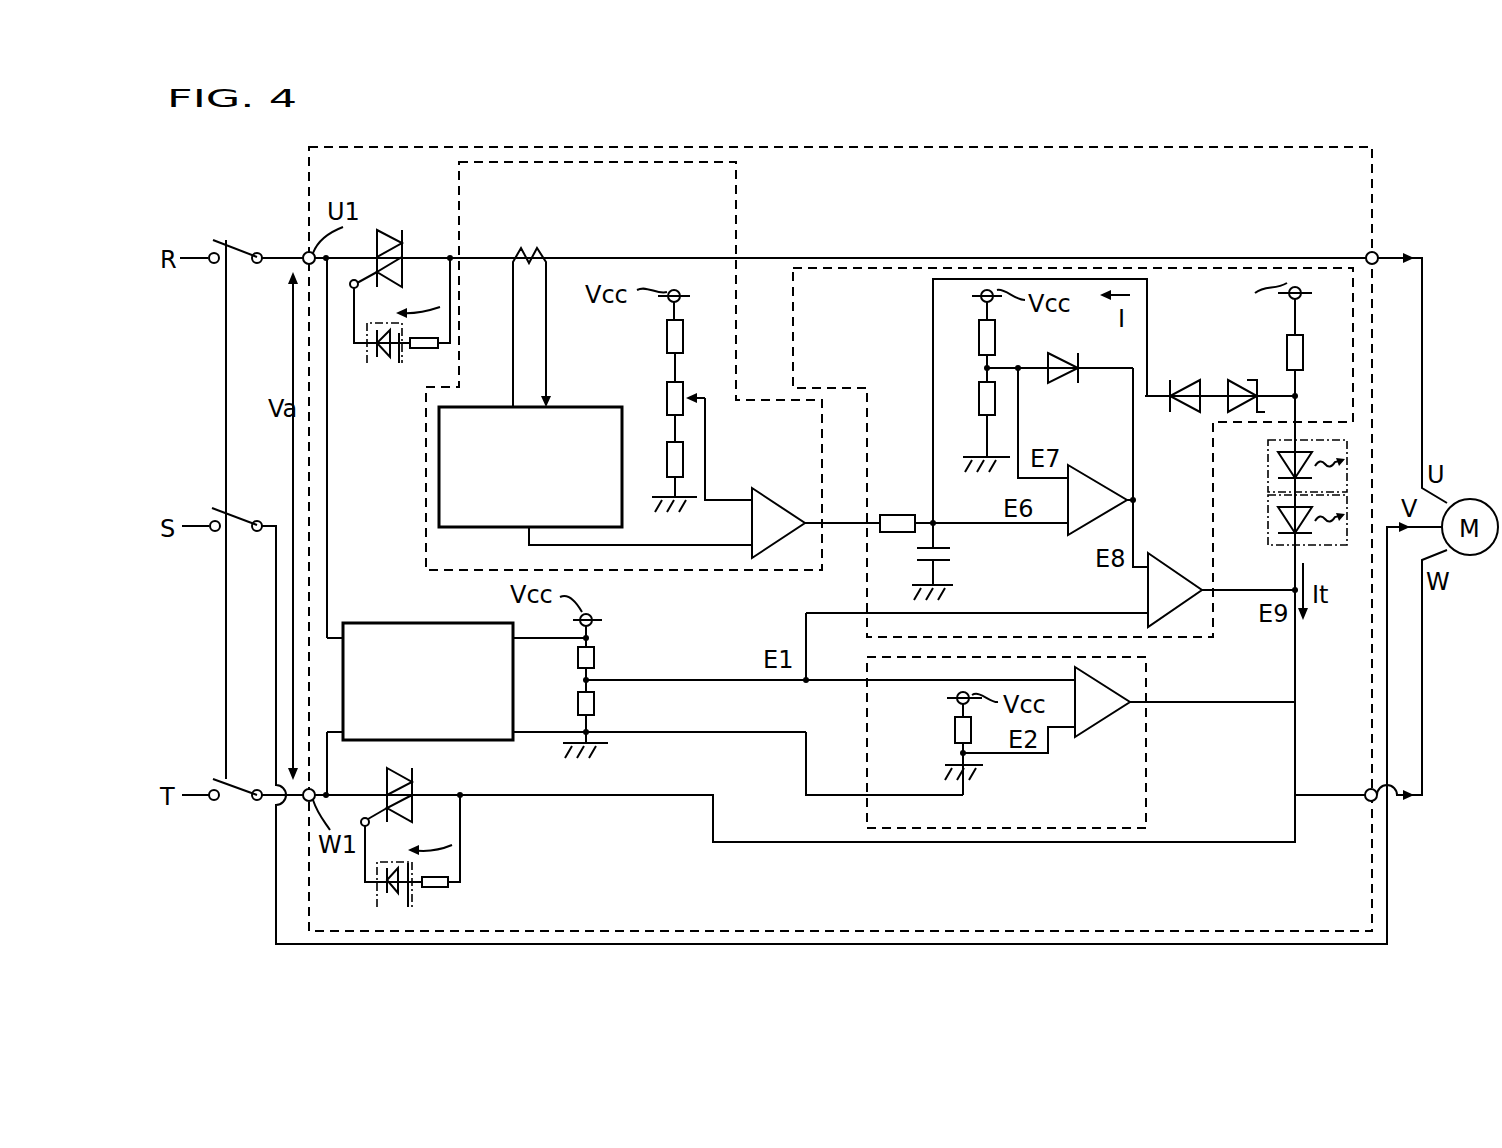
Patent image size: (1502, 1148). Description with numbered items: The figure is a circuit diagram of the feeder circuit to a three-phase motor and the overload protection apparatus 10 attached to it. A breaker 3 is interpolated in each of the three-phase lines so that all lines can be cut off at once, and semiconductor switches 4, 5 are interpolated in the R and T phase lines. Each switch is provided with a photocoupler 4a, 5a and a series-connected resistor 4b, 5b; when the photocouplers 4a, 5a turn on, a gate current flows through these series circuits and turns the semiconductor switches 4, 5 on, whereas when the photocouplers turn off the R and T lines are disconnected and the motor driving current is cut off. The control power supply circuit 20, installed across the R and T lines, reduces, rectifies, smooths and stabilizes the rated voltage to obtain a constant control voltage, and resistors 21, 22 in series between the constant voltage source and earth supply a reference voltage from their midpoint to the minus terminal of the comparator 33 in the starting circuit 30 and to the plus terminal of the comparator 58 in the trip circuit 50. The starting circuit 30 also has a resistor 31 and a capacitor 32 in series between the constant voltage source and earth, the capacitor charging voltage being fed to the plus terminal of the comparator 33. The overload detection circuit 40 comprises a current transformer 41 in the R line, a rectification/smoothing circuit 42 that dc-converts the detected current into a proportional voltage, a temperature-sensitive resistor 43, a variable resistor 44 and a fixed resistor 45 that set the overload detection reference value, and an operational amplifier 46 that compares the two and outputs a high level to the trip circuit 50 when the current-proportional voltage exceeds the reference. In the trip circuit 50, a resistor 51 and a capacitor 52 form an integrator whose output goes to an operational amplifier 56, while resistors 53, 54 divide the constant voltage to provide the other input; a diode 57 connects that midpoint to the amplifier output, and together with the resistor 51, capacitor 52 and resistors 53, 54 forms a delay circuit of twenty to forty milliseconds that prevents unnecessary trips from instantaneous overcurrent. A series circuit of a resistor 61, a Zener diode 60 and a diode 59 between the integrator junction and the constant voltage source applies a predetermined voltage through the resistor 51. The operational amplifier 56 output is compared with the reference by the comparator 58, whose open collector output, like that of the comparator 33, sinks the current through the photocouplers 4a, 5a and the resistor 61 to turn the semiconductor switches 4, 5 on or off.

The breaker 3 is at (233, 237).
The semiconductor switch 4 is at (390, 224).
The photocoupler 4a is at (380, 363).
The resistor 4b is at (425, 352).
The semiconductor switch 5 is at (413, 773).
The photocoupler 5a is at (392, 908).
The resistor 5b is at (435, 887).
The overload protection apparatus 10 is at (1373, 175).
The control power supply circuit 20 is at (378, 622).
The resistor 21 is at (577, 660).
The resistor 22 is at (577, 703).
The starting circuit 30 is at (1147, 770).
The resistor 31 is at (955, 728).
The capacitor 32 is at (943, 772).
The comparator 33 is at (1090, 730).
The overload detection circuit 40 is at (736, 193).
The current transformer 41 is at (530, 250).
The rectification/smoothing circuit 42 is at (500, 528).
The temperature-sensitive resistor 43 is at (665, 332).
The variable resistor 44 is at (667, 397).
The fixed resistor 45 is at (663, 458).
The operational amplifier 46 is at (757, 488).
The trip circuit 50 is at (852, 265).
The resistor 51 is at (895, 510).
The capacitor 52 is at (958, 553).
The resistor 53 is at (977, 338).
The resistor 54 is at (977, 398).
The operational amplifier 56 is at (1108, 483).
The diode 57 is at (1060, 390).
The comparator 58 is at (1188, 577).
The diode 59 is at (1187, 377).
The Zener diode 60 is at (1242, 377).
The resistor 61 is at (1303, 352).